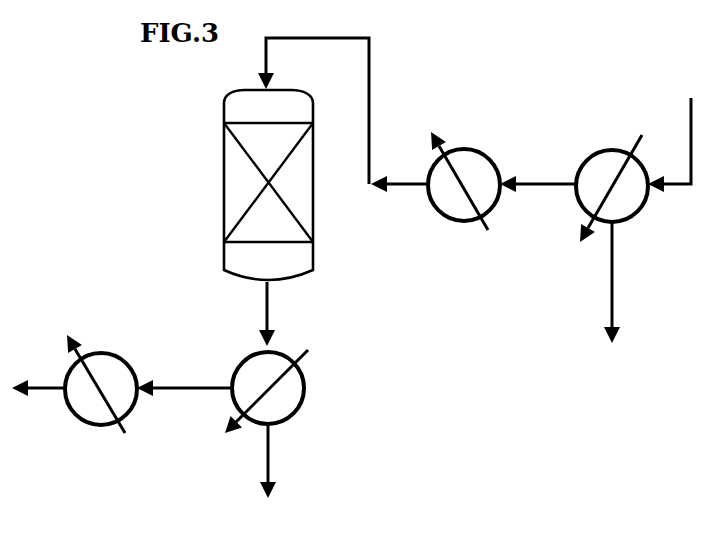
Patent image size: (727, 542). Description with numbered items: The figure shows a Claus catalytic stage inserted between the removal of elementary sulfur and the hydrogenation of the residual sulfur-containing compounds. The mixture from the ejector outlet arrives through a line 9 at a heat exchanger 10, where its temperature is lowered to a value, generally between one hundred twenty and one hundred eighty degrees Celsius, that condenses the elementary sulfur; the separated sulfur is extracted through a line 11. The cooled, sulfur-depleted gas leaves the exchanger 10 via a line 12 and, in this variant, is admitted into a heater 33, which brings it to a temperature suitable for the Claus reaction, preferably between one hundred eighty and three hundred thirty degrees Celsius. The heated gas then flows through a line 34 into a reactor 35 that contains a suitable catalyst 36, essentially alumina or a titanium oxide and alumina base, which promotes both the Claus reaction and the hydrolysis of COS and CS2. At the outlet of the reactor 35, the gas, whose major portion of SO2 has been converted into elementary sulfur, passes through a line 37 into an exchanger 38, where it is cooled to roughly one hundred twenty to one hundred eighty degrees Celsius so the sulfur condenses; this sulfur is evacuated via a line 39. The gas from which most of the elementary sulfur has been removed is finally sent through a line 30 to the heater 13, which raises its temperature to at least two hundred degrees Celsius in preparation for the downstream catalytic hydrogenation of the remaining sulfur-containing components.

The line 9 is at (691, 132).
The heat exchanger 10 is at (610, 150).
The line 11 is at (612, 298).
The line 12 is at (548, 183).
The heater 13 is at (77, 421).
The line 30 is at (203, 363).
The heater 33 is at (473, 149).
The line 34 is at (369, 68).
The reactor 35 is at (224, 160).
The catalyst 36 is at (279, 153).
The line 37 is at (270, 307).
The exchanger 38 is at (304, 387).
The line 39 is at (270, 452).